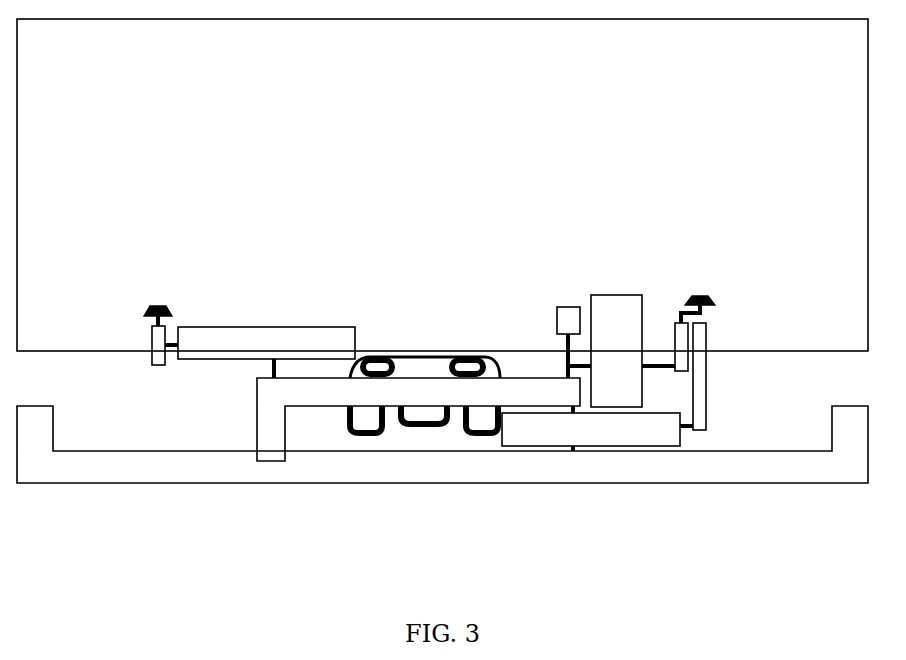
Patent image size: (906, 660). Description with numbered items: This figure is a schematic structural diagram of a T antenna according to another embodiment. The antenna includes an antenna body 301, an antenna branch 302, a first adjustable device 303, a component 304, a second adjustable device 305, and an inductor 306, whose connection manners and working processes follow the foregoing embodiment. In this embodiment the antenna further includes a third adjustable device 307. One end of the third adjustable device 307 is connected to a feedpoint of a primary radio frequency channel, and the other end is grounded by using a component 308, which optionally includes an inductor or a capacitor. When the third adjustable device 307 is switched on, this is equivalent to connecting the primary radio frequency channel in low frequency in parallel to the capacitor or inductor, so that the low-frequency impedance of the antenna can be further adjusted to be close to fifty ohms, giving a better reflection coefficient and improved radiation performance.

The antenna body 301 is at (448, 484).
The antenna branch 302 is at (257, 410).
The first adjustable device 303 is at (545, 447).
The component 304 is at (708, 383).
The second adjustable device 305 is at (355, 343).
The inductor 306 is at (152, 344).
The third adjustable device 307 is at (590, 360).
The component 308 is at (674, 330).